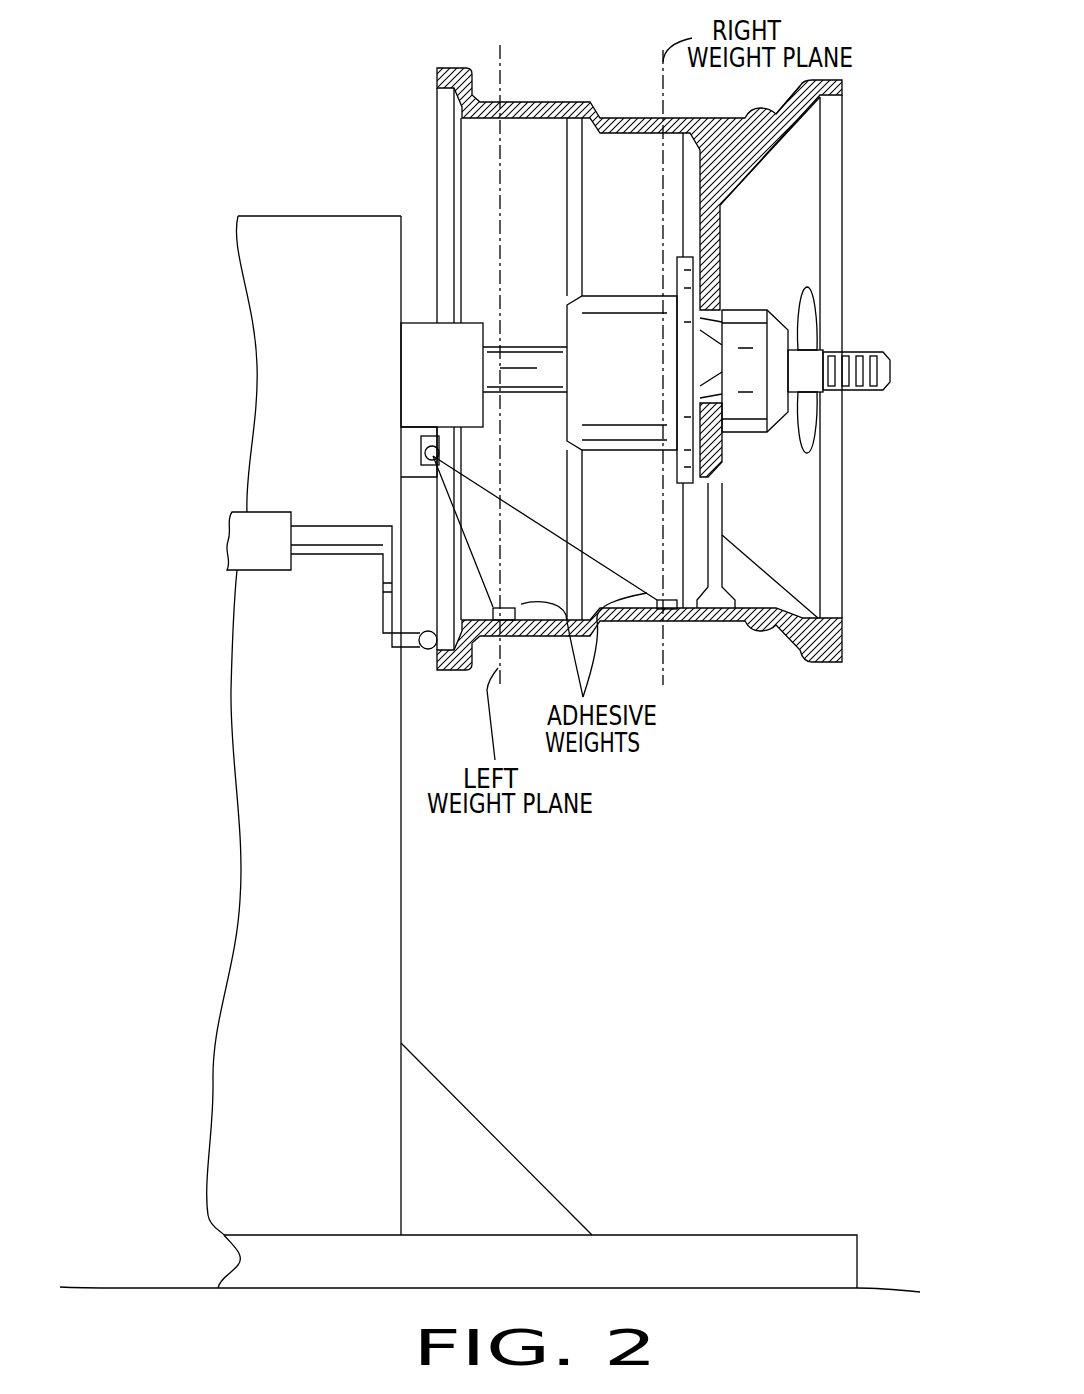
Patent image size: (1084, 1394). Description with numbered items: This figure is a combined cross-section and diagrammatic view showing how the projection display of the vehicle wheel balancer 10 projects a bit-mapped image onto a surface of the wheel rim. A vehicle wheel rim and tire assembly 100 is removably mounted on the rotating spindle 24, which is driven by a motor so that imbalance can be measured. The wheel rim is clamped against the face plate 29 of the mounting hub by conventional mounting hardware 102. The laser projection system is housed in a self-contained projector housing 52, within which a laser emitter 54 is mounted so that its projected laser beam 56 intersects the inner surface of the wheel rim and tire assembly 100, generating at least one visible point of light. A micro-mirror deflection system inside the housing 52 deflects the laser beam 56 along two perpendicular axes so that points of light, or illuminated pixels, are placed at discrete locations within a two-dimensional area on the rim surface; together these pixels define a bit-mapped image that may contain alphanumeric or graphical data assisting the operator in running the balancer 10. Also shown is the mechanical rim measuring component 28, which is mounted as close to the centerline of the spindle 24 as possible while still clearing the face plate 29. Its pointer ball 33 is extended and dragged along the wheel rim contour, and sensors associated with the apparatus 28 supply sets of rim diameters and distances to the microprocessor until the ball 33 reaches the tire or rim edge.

The vehicle wheel balancer 10 is at (322, 1204).
The rotating spindle 24 is at (535, 373).
The rim measuring component 28 is at (339, 537).
The face plate 29 is at (617, 338).
The pointer ball 33 is at (428, 649).
The projector housing 52 is at (400, 431).
The laser emitter 54 is at (425, 460).
The laser beam 56 is at (482, 569).
The vehicle wheel rim and tire assembly 100 is at (482, 183).
The mounting hardware 102 is at (785, 273).